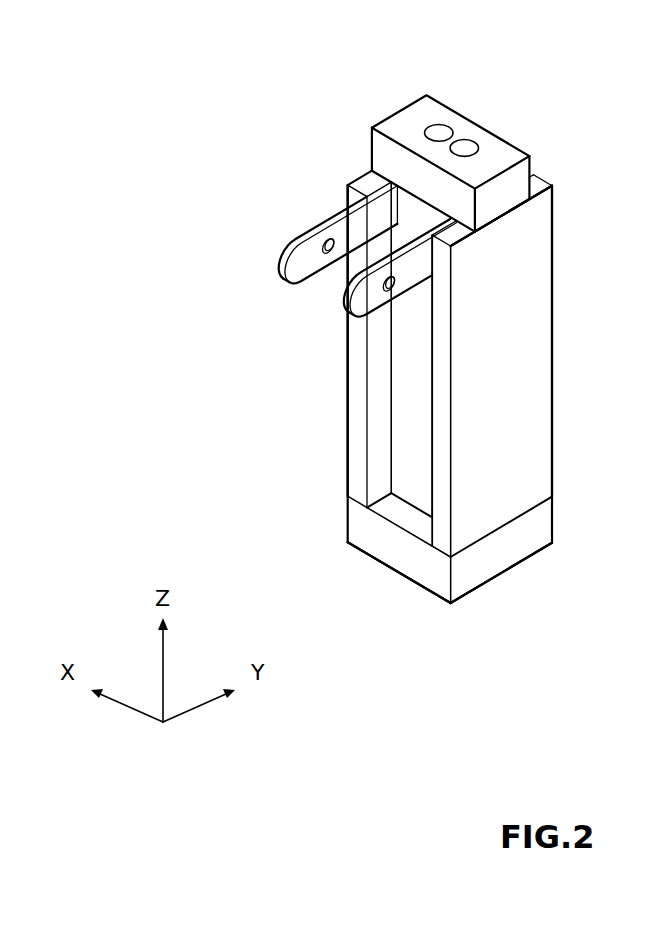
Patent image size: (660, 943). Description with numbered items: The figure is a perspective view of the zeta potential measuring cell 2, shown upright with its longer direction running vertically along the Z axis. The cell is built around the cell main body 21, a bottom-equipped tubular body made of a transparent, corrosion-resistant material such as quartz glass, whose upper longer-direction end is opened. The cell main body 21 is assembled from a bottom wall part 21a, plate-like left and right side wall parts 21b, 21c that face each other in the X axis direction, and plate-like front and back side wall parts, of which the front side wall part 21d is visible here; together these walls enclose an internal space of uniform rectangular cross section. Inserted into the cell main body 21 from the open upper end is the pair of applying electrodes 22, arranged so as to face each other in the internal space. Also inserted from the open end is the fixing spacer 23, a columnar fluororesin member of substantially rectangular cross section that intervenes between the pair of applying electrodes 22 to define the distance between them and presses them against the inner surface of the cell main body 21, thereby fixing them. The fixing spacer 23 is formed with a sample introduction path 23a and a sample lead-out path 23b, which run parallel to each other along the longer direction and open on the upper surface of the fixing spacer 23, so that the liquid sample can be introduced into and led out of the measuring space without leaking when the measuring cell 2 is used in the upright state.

The measuring cell 2 is at (347, 92).
The cell main body 21 is at (553, 365).
The bottom wall part 21a is at (505, 552).
The left side wall part 21b is at (347, 398).
The right side wall part 21c is at (503, 418).
The front side wall part 21d is at (410, 445).
The applying electrodes 22 is at (347, 306).
The fixing spacer 23 is at (520, 148).
The sample introduction path 23a is at (430, 127).
The sample lead-out path 23b is at (470, 140).